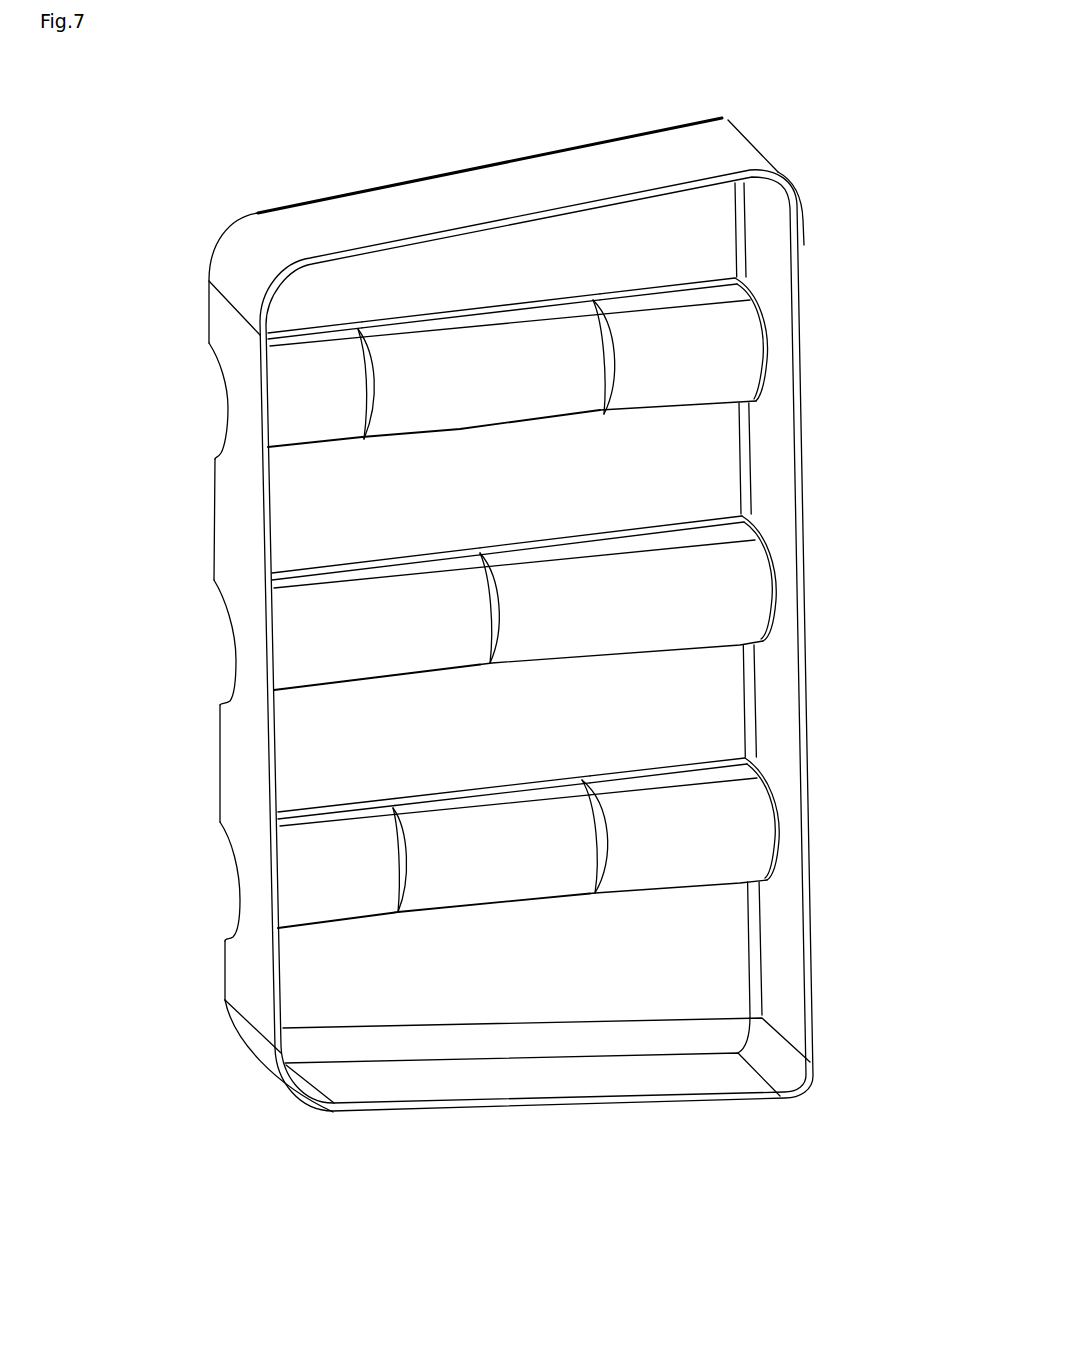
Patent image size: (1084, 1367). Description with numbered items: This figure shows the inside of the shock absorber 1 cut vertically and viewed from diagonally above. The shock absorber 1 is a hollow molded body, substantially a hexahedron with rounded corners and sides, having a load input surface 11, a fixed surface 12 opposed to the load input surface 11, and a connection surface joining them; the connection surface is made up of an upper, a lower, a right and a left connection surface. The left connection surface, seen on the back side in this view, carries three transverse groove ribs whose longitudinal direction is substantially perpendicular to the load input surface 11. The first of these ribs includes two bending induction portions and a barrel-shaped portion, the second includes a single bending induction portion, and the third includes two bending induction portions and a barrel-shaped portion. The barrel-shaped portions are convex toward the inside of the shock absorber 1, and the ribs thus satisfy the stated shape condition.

The shock absorber 1 is at (813, 117).
The load input surface 11 is at (250, 513).
The fixed surface 12 is at (818, 667).